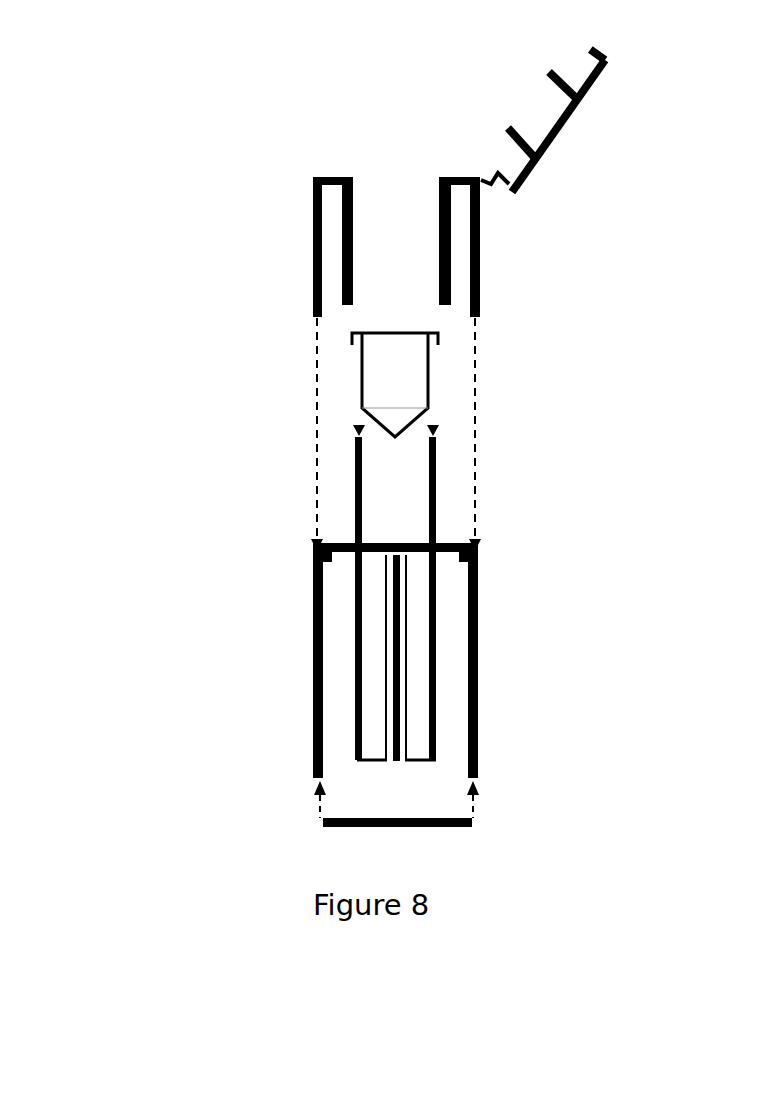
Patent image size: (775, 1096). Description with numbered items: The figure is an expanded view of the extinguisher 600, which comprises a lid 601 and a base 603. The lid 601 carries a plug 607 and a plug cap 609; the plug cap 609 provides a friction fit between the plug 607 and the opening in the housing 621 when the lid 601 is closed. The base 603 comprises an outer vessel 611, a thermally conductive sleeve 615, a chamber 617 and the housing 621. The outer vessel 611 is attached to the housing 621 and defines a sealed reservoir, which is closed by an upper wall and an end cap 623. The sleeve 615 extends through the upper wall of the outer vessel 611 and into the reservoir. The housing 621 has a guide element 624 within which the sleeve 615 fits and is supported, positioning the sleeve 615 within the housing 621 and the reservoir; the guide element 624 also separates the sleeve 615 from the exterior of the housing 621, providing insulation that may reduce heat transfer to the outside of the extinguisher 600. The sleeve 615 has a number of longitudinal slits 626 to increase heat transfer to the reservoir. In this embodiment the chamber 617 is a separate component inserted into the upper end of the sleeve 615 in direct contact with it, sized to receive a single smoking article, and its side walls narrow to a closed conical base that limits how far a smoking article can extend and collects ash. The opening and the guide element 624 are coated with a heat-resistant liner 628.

The extinguisher 600 is at (336, 141).
The lid 601 is at (581, 136).
The base 603 is at (496, 643).
The plug 607 is at (520, 138).
The plug cap 609 is at (547, 74).
The outer vessel 611 is at (478, 737).
The thermally conductive sleeve 615 is at (349, 494).
The chamber 617 is at (361, 362).
The housing 621 is at (340, 219).
The end cap 623 is at (350, 823).
The guide element 624 is at (388, 655).
The longitudinal slits 626 is at (364, 430).
The heat-resistant liner 628 is at (353, 267).